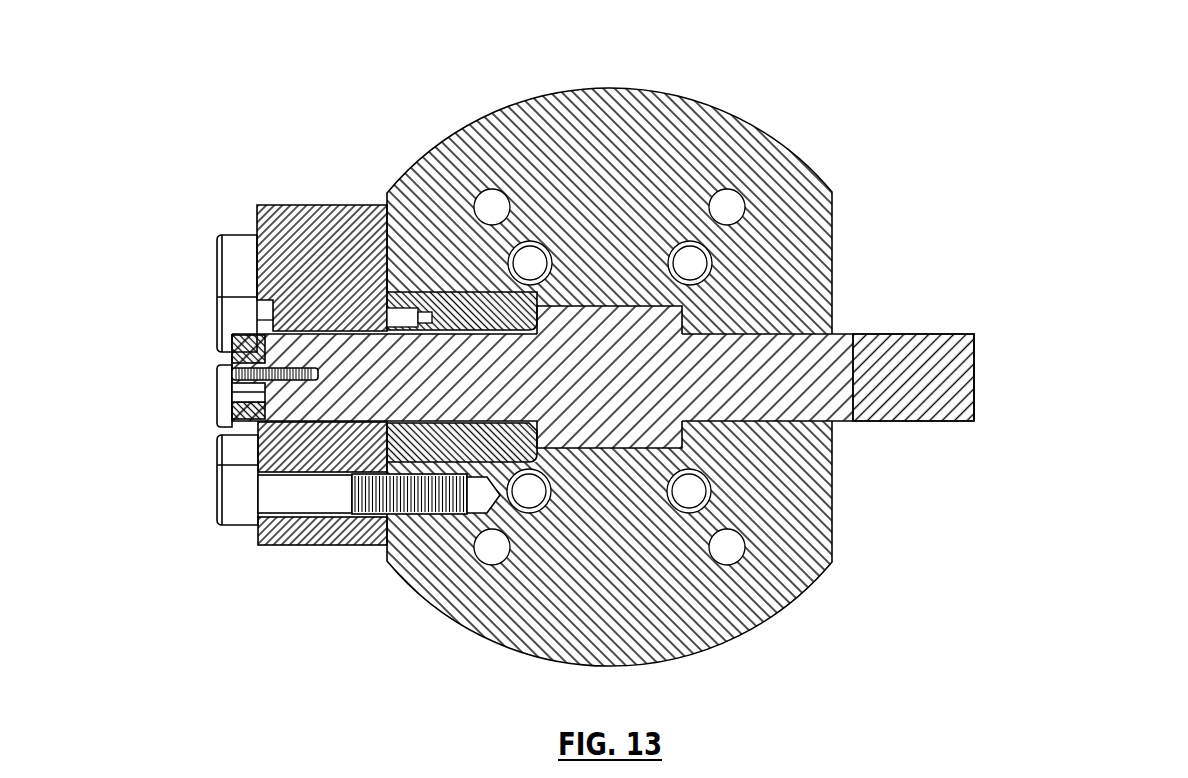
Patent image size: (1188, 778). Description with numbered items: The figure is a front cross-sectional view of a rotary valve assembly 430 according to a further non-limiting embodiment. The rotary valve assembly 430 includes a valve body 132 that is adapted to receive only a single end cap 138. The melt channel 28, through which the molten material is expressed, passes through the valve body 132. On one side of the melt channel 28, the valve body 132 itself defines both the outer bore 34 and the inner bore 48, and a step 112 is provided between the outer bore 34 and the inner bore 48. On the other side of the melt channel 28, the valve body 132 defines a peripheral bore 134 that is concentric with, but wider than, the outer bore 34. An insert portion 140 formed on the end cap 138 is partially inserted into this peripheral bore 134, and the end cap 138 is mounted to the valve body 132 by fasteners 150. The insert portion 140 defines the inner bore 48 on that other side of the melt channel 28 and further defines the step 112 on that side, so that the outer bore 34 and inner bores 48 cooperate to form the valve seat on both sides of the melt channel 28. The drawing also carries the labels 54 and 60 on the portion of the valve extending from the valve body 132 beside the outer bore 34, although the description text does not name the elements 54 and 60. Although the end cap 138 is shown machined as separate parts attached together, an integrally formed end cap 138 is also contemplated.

The melt channel 28 is at (621, 391).
The outer bore 34 is at (979, 392).
The inner bore 48 is at (707, 407).
The shaft intermediate portion 54 is at (867, 422).
The shaft end face 60 is at (975, 390).
The step 112 is at (533, 298).
The valve body 132 is at (787, 152).
The peripheral bore 134 is at (172, 290).
The end cap 138 is at (276, 176).
The insert portion 140 is at (420, 448).
The fasteners 150 is at (288, 497).
The rotary valve assembly 430 is at (1004, 612).